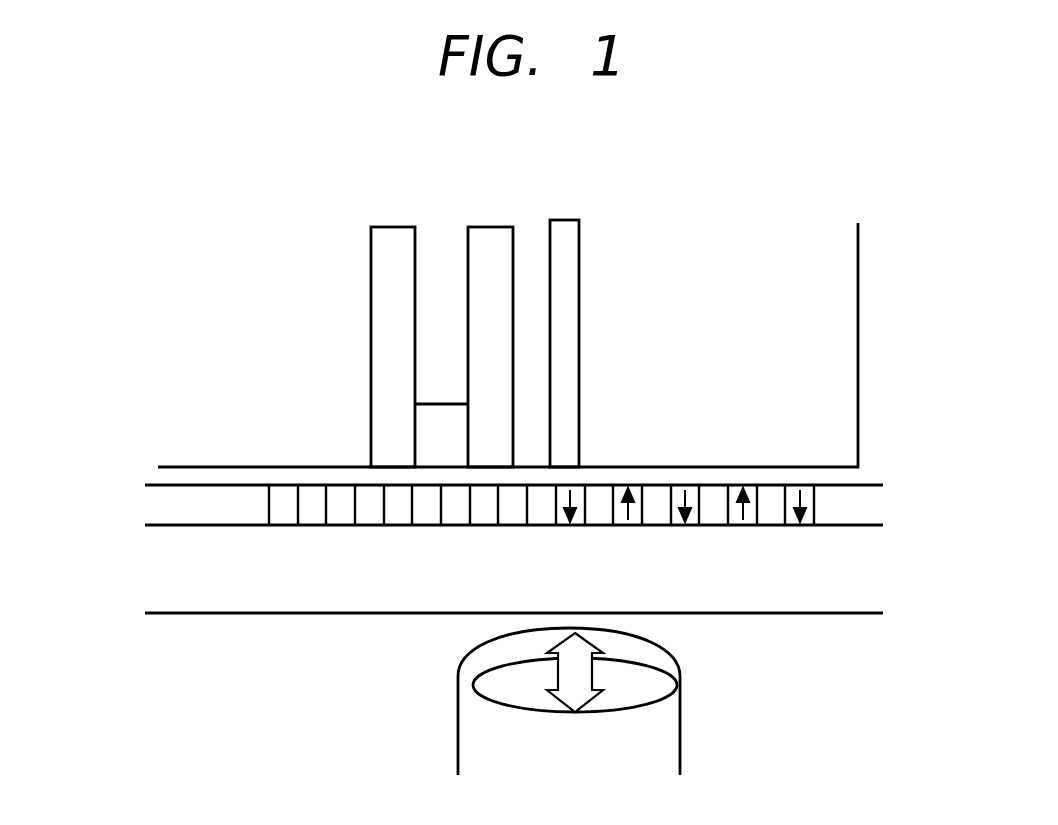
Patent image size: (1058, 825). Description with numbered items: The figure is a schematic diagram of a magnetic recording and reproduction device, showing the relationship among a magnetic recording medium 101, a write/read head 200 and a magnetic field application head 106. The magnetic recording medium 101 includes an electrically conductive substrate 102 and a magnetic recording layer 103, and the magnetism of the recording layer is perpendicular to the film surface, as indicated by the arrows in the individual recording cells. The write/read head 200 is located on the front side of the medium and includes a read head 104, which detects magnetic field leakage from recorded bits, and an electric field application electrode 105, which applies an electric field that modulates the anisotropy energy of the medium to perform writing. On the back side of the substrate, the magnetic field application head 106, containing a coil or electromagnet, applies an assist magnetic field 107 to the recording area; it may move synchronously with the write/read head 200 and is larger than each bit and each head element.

The magnetic recording medium 101 is at (905, 481).
The electrically conductive substrate 102 is at (170, 578).
The magnetic recording layer 103 is at (170, 508).
The read head 104 is at (512, 204).
The electric field application electrode 105 is at (568, 283).
The magnetic field application head 106 is at (680, 747).
The assist magnetic field 107 is at (570, 677).
The write/read head 200 is at (782, 347).